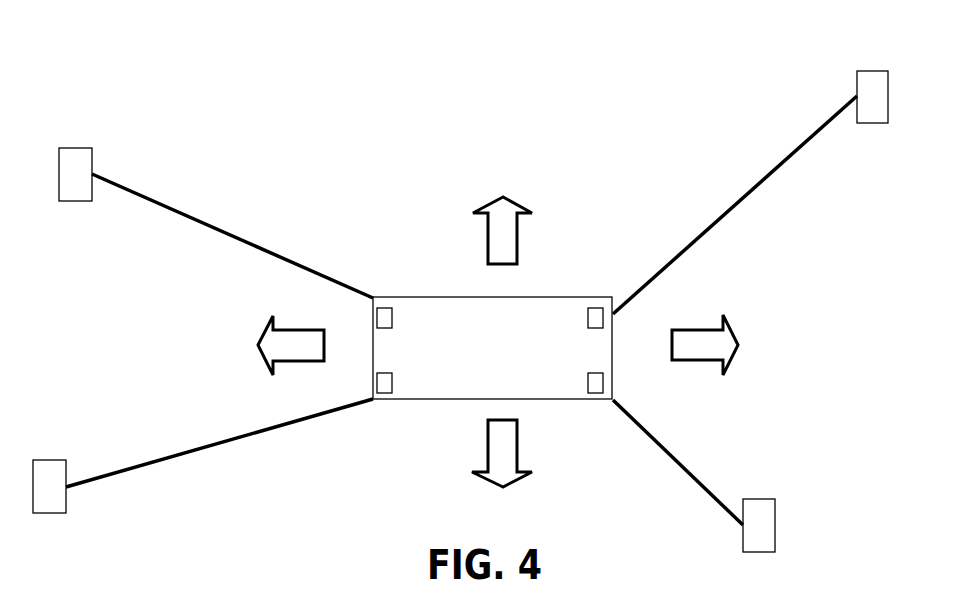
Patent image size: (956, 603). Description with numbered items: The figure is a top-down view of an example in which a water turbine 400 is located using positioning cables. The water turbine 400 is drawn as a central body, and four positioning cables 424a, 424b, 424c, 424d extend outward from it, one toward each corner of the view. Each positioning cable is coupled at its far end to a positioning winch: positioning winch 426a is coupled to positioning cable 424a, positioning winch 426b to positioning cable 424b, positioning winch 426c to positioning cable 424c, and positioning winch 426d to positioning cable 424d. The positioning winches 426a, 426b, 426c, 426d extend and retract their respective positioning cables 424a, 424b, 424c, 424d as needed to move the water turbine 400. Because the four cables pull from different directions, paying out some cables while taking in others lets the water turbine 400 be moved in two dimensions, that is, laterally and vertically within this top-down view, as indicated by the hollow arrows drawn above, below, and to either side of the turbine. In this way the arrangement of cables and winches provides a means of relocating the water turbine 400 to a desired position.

The water turbine 400 is at (428, 307).
The positioning cable 424a is at (228, 232).
The positioning cable 424b is at (728, 207).
The positioning cable 424c is at (675, 455).
The positioning cable 424d is at (165, 457).
The positioning winch 426a is at (70, 150).
The positioning winch 426b is at (873, 74).
The positioning winch 426c is at (765, 503).
The positioning winch 426d is at (48, 462).